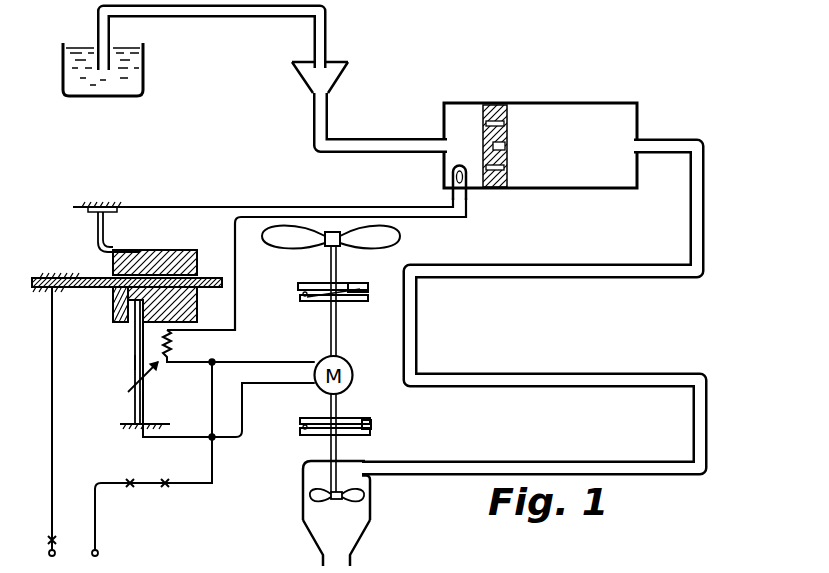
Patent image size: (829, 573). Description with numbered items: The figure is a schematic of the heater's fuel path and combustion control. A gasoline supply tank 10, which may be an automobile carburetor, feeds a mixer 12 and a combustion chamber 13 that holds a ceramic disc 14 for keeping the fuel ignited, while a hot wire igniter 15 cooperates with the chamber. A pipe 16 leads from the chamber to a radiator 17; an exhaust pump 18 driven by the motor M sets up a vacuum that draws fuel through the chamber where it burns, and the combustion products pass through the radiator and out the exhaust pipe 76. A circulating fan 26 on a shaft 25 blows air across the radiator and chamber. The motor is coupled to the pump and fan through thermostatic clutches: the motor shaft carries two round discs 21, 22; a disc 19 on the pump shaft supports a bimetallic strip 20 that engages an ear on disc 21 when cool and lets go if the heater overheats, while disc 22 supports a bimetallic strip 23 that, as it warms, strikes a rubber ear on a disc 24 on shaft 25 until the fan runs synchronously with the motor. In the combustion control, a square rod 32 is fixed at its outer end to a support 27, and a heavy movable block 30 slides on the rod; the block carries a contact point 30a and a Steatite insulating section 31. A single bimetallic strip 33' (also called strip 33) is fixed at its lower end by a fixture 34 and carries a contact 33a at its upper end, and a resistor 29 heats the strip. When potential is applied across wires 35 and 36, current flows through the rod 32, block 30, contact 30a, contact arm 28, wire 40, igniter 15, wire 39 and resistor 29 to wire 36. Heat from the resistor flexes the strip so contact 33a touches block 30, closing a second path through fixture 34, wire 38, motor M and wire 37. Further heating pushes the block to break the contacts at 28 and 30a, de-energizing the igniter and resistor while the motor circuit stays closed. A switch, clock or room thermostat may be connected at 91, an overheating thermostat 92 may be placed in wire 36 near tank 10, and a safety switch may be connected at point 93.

The gasoline supply tank 10 is at (143, 80).
The mixer 12 is at (346, 70).
The combustion chamber 13 is at (570, 103).
The ceramic disc 14 is at (507, 108).
The hot wire igniter 15 is at (452, 176).
The pipe 16 is at (705, 207).
The radiator 17 is at (551, 372).
The exhaust pump 18 is at (366, 494).
The disc 19 is at (370, 433).
The bimetallic strip 20 is at (372, 425).
The disc 21 is at (305, 418).
The disc 22 is at (360, 299).
The bimetallic strip 23 is at (350, 283).
The disc 24 is at (298, 285).
The shaft 25 is at (331, 265).
The circulating fan 26 is at (398, 238).
The support 27 is at (108, 205).
The contact arm 28 is at (104, 222).
The resistor 29 is at (172, 352).
The movable block 30 is at (197, 262).
The contact point 30a is at (113, 254).
The insulating section 31 is at (113, 312).
The square rod 32 is at (92, 275).
The bimetallic strip 33 is at (130, 362).
The contact 33a is at (138, 326).
The bimetallic strip 33' is at (121, 361).
The fixture 34 is at (120, 428).
The wire 35 is at (52, 533).
The wire 36 is at (96, 537).
The wire 37 is at (240, 362).
The wire 38 is at (276, 384).
The wire 39 is at (235, 315).
The wire 40 is at (300, 206).
The exhaust pipe 76 is at (340, 553).
The connection point 91 is at (58, 540).
The overheating thermostat 92 is at (166, 486).
The safety switch point 93 is at (130, 486).